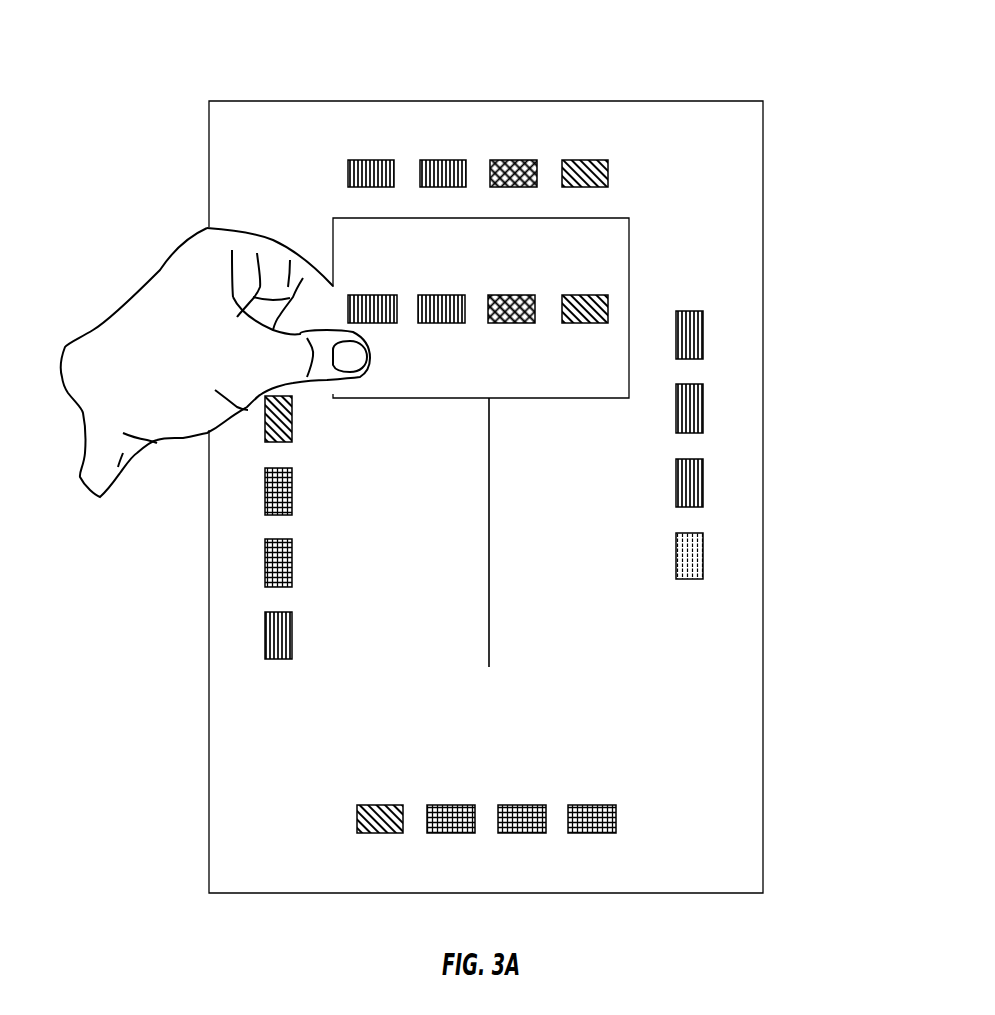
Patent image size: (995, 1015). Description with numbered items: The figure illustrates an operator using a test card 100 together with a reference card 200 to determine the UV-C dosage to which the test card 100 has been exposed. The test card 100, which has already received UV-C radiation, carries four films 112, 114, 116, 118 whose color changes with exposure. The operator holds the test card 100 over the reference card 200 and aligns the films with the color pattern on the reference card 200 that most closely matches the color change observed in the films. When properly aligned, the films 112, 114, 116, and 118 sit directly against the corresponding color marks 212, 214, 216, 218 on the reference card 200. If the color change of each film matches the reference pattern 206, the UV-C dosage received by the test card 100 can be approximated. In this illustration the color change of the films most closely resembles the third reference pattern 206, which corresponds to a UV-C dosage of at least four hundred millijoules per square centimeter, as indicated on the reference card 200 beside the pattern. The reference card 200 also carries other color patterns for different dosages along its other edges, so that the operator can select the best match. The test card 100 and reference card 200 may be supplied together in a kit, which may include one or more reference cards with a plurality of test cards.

The test card 100 is at (508, 294).
The film 112 is at (392, 325).
The film 114 is at (448, 325).
The film 116 is at (520, 325).
The film 118 is at (592, 325).
The reference card 200 is at (765, 238).
The reference pattern 206 is at (470, 100).
The color mark 212 is at (360, 158).
The color mark 214 is at (445, 158).
The color mark 216 is at (501, 158).
The color mark 218 is at (598, 152).